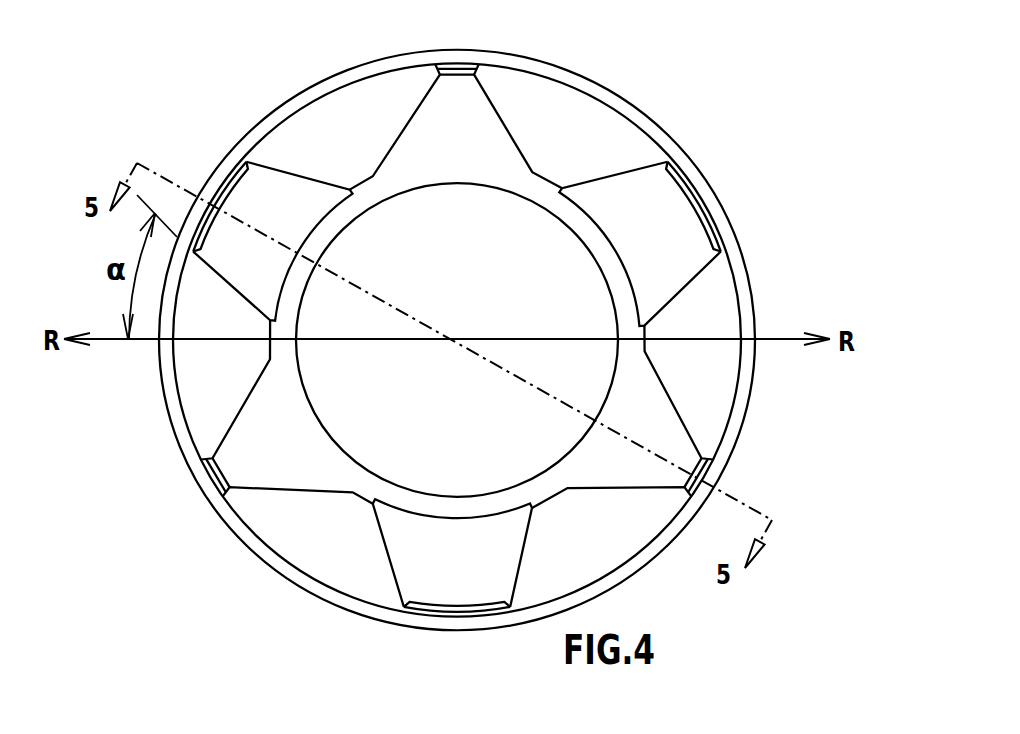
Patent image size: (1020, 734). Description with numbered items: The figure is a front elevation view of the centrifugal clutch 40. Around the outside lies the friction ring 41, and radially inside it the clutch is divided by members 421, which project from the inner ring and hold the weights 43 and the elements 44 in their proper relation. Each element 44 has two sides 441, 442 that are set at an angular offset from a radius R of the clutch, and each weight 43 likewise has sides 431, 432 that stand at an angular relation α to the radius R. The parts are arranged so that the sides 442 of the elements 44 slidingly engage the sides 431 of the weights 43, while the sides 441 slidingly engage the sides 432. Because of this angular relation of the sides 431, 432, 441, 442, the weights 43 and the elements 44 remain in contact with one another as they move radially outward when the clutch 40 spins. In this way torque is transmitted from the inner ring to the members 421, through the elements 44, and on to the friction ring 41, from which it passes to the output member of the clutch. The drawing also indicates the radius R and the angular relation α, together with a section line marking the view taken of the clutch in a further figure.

The clutch 40 is at (796, 50).
The friction ring 41 is at (757, 308).
The members 421 is at (410, 162).
The weights 43 is at (514, 340).
The side of weight 431 is at (670, 205).
The side of weight 432 is at (722, 243).
The elements 44 is at (457, 312).
The side of element 441 is at (505, 111).
The side of element 442 is at (602, 178).